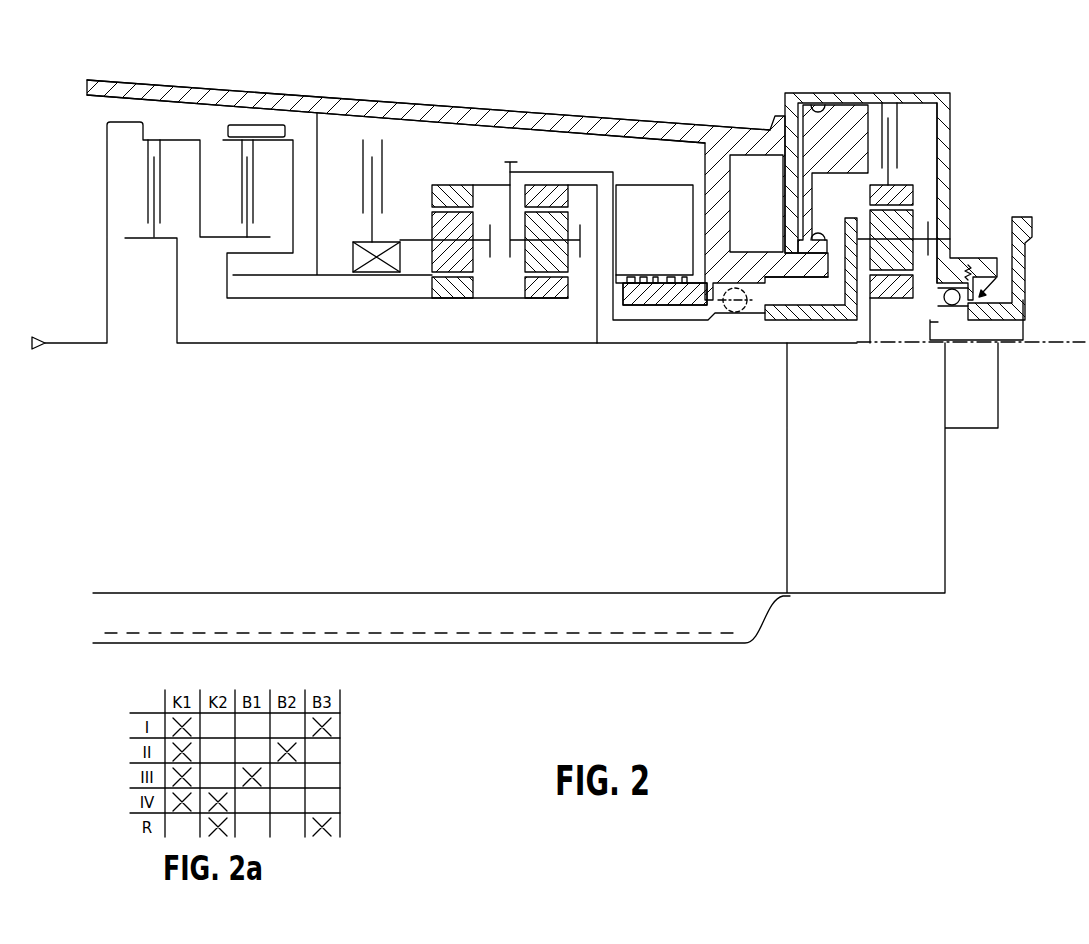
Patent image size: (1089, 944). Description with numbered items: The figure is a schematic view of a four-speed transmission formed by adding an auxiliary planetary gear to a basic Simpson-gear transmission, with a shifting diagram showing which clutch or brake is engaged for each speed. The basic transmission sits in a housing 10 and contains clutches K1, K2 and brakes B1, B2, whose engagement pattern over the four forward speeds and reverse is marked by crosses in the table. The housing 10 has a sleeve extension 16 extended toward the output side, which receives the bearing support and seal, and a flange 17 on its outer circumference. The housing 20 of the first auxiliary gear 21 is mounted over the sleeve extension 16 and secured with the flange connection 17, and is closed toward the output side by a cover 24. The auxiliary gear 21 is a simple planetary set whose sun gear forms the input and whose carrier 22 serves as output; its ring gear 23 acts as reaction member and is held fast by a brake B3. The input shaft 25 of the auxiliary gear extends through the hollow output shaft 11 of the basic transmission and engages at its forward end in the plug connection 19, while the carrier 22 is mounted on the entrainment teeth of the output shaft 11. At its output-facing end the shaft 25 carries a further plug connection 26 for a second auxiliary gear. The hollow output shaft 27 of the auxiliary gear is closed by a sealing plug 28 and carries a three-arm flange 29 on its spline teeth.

The housing 10 is at (559, 127).
The output shaft 11 is at (667, 313).
The sleeve extension 16 is at (810, 268).
The flange 17 is at (772, 117).
The plug connection 19 is at (597, 343).
The housing 20 is at (822, 97).
The first auxiliary gear 21 is at (927, 180).
The carrier 22 is at (927, 238).
The ring gear 23 is at (873, 193).
The cover 24 is at (940, 133).
The input shaft 25 is at (820, 343).
The further plug connection 26 is at (870, 343).
The output shaft 27 is at (960, 343).
The sealing plug 28 is at (1018, 335).
The three-arm flange 29 is at (1022, 262).
The clutch K1 is at (168, 188).
The clutch K2 is at (262, 188).
The brake B1 is at (229, 130).
The brake B2 is at (382, 206).
The brake B3 is at (895, 200).